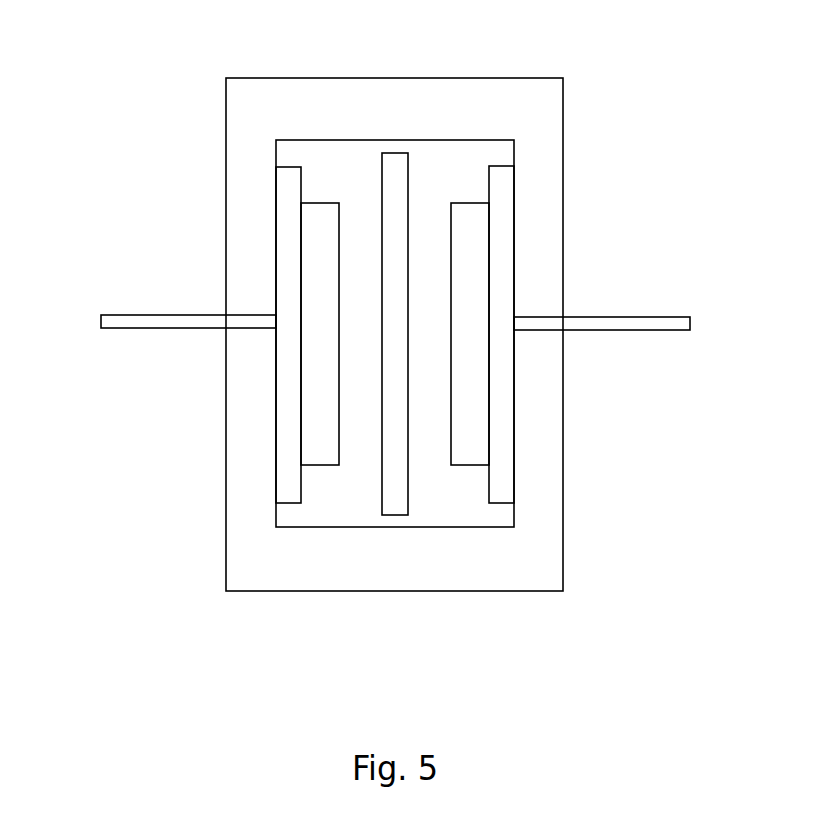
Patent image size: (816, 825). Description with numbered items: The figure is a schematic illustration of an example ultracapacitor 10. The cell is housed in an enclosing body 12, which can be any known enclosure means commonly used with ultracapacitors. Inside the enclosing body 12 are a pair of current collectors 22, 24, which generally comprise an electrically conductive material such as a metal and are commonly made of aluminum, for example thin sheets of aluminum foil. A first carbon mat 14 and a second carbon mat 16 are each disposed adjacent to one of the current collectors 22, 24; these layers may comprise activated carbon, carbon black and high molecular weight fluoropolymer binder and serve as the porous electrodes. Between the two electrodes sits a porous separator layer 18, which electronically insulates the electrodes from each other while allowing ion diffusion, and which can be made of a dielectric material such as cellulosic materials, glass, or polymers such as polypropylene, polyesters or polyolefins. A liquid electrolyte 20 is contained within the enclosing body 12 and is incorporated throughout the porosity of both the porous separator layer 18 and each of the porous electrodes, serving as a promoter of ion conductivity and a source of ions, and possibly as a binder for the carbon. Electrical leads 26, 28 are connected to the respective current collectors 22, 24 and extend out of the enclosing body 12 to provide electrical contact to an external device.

The ultracapacitor 10 is at (140, 85).
The enclosing body 12 is at (526, 565).
The first carbon mat 14 is at (326, 453).
The second carbon mat 16 is at (472, 453).
The porous separator layer 18 is at (394, 165).
The liquid electrolyte 20 is at (470, 190).
The current collector 22 is at (288, 229).
The current collector 24 is at (497, 233).
The electrical lead 26 is at (138, 322).
The electrical lead 28 is at (658, 325).